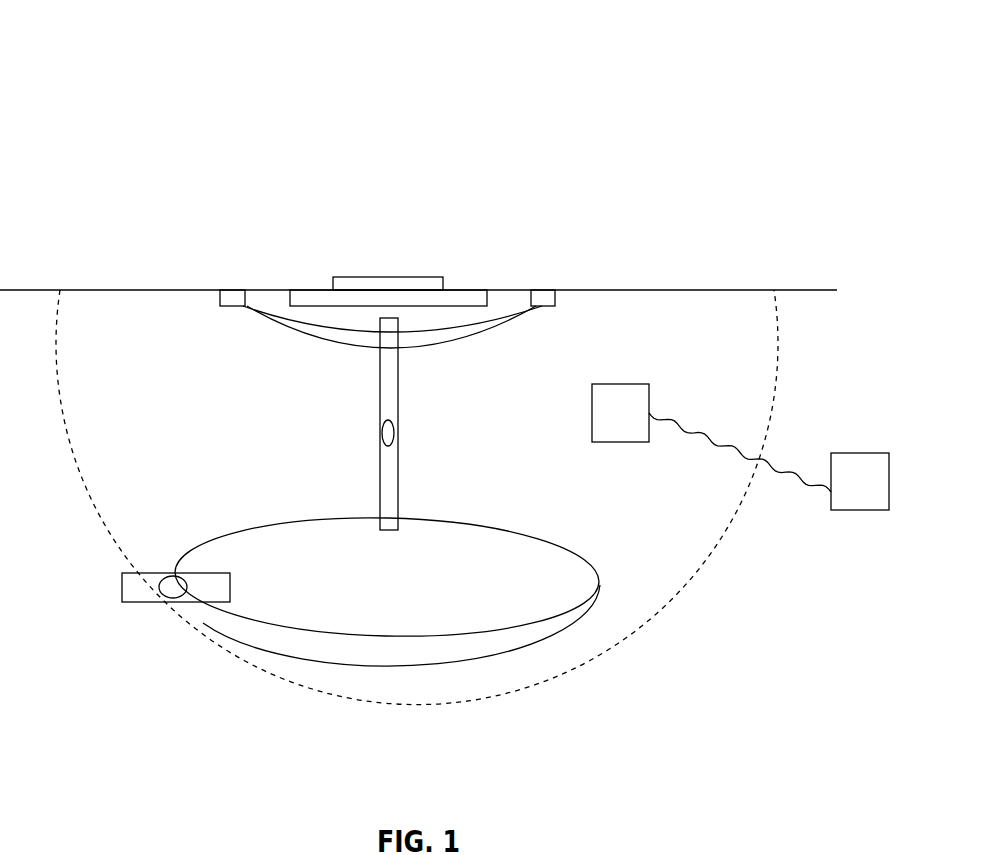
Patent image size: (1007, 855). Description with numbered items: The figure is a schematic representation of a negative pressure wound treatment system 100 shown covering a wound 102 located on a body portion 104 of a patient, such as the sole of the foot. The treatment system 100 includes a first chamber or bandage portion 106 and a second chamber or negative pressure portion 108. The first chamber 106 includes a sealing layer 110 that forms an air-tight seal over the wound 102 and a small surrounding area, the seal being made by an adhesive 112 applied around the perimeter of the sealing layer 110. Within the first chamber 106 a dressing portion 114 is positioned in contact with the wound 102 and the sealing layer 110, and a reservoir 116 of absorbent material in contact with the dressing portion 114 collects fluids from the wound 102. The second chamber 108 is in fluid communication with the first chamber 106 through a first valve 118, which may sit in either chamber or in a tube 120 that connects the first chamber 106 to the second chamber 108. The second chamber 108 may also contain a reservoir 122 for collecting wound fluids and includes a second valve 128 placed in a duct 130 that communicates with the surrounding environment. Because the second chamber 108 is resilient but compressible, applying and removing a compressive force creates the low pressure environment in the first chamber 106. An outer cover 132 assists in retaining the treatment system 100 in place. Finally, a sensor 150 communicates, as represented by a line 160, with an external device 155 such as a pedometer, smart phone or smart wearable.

The negative pressure wound treatment system 100 is at (133, 48).
The wound 102 is at (368, 277).
The body portion 104 is at (655, 285).
The first chamber 106 is at (246, 320).
The second chamber 108 is at (236, 525).
The sealing layer 110 is at (536, 318).
The adhesive 112 is at (232, 296).
The dressing portion 114 is at (472, 298).
The reservoir 116 is at (427, 340).
The first valve 118 is at (395, 432).
The tube 120 is at (400, 475).
The reservoir 122 is at (465, 637).
The second valve 128 is at (172, 594).
The duct 130 is at (122, 588).
The outer cover 132 is at (705, 563).
The sensor 150 is at (628, 395).
The external device 155 is at (855, 462).
The line 160 is at (708, 440).